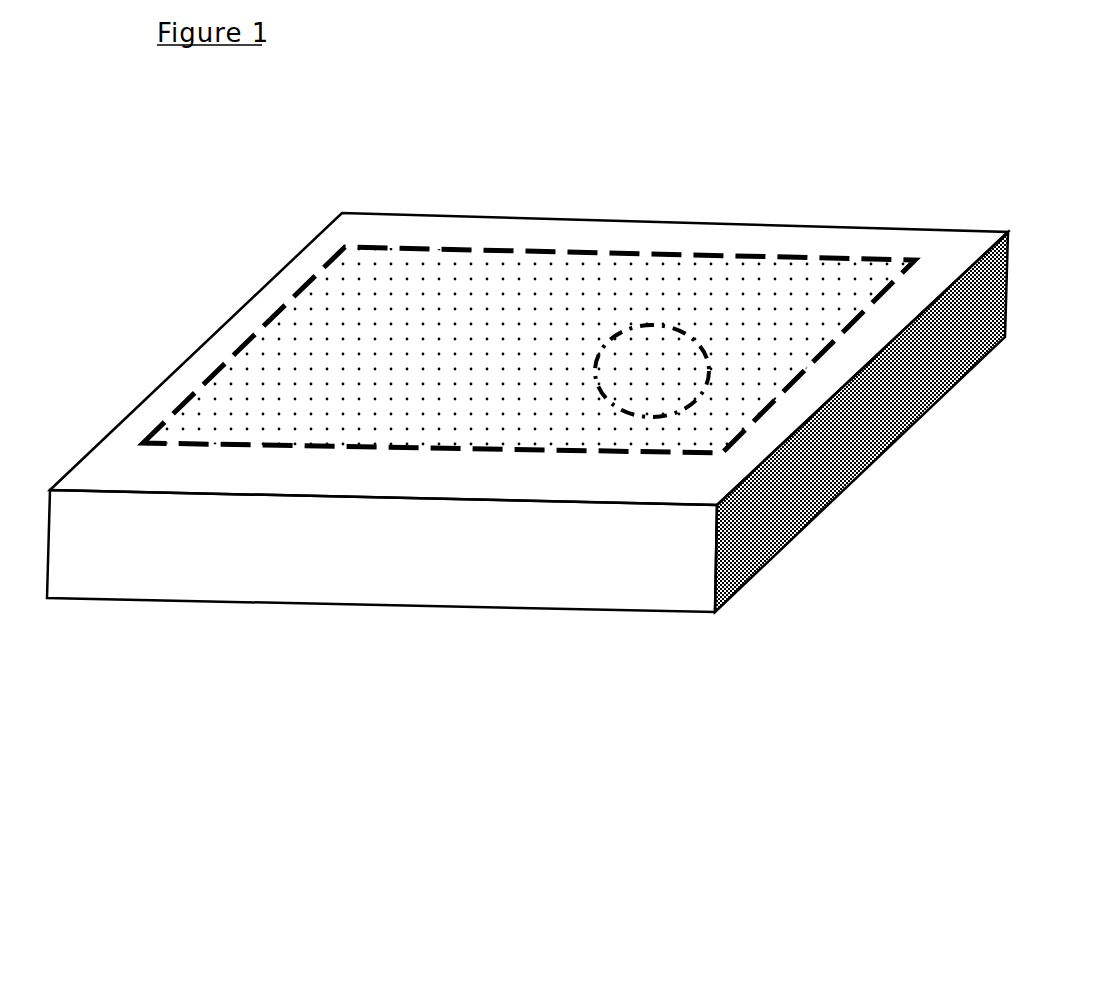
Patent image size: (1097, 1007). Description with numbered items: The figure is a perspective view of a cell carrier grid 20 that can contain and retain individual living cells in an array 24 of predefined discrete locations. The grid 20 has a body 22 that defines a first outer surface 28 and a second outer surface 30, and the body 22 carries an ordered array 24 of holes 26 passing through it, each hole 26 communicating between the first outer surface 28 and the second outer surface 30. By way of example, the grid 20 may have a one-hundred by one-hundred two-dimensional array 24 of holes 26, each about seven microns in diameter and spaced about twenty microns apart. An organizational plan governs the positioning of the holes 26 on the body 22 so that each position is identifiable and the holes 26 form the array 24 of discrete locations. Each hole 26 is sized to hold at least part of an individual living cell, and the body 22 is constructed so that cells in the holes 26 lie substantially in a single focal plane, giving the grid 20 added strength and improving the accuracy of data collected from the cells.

The cell carrier grid 20 is at (405, 46).
The body 22 is at (520, 538).
The array 24 is at (790, 380).
The holes 26 is at (690, 382).
The first outer surface 28 is at (925, 272).
The second outer surface 30 is at (673, 610).